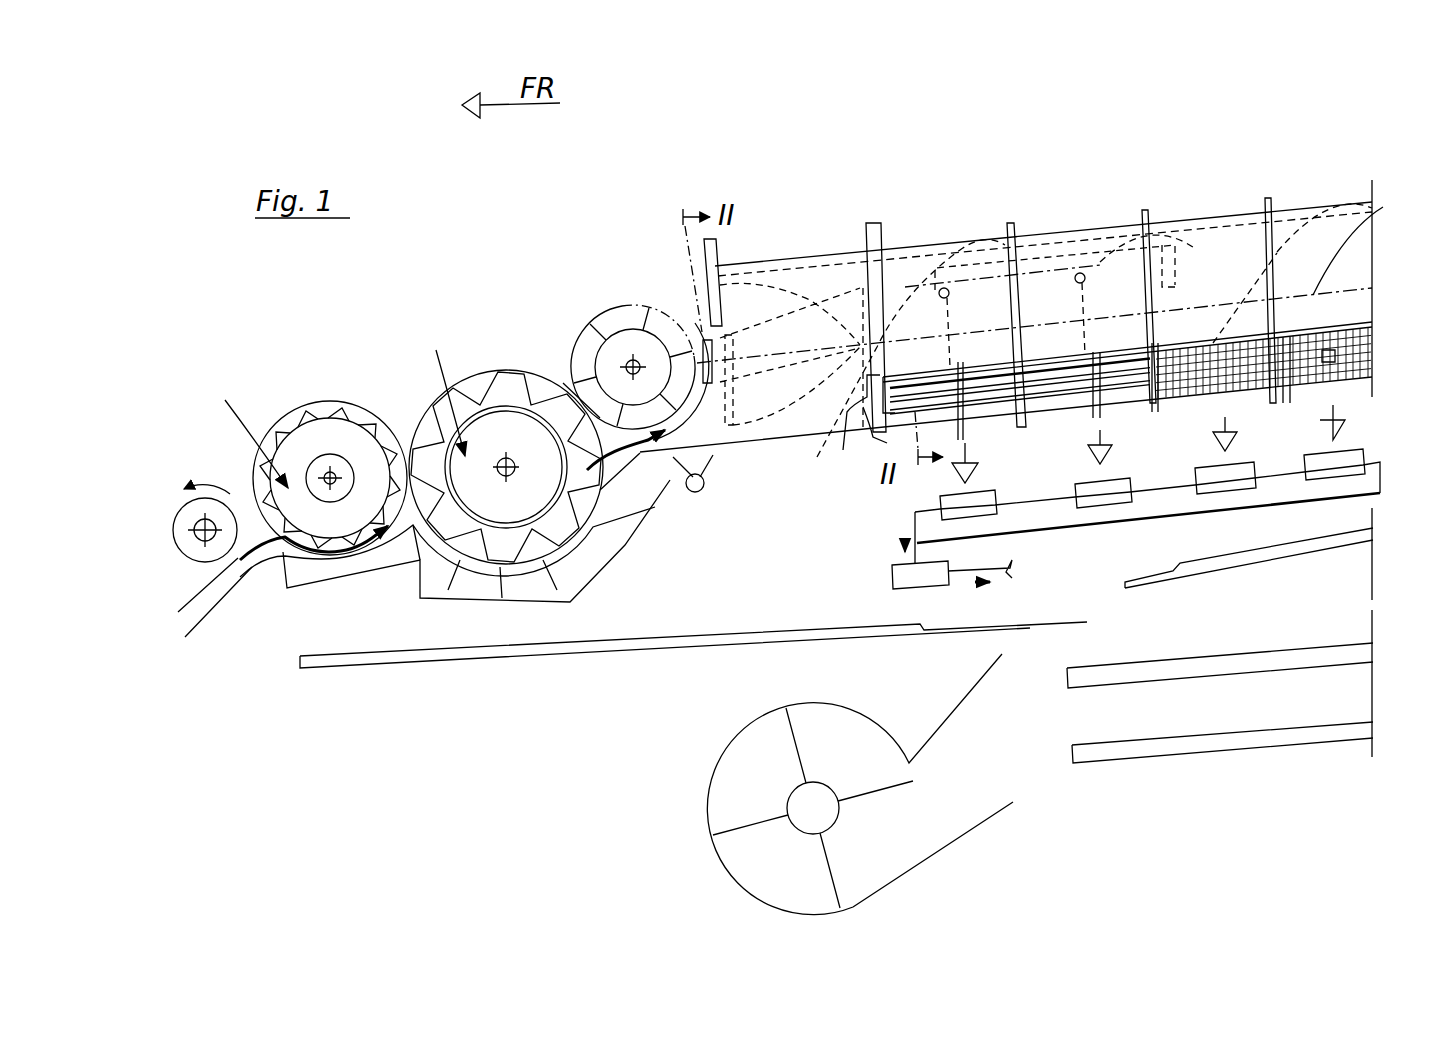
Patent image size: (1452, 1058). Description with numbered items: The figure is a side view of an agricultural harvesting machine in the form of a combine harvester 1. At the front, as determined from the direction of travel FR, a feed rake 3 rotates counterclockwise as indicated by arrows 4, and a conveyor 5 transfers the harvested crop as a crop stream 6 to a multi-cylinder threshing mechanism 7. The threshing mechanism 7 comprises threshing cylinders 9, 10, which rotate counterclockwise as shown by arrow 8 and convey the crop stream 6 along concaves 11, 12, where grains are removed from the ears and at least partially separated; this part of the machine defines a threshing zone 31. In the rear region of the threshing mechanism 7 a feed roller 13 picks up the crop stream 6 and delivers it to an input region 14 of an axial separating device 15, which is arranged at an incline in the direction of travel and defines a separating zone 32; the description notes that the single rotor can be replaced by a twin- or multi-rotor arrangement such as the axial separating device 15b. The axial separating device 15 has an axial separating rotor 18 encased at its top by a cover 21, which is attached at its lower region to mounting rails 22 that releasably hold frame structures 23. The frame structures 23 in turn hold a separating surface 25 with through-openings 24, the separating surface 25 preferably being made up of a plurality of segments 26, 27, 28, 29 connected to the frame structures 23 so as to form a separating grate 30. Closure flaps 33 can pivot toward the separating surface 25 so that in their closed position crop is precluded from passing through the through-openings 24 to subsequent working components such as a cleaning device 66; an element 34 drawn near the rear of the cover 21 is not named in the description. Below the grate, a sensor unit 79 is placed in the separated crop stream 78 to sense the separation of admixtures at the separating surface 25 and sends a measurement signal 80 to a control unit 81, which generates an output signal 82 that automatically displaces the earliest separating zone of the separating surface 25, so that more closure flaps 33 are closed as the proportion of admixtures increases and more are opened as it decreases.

The combine harvester 1 is at (1096, 156).
The feed rake 3 is at (186, 527).
The arrows 4 is at (203, 488).
The conveyor 5 is at (203, 583).
The crop stream 6 is at (248, 568).
The multi-cylinder threshing mechanism 7 is at (435, 452).
The arrow 8 is at (338, 403).
The threshing cylinder 9 is at (315, 440).
The threshing cylinder 10 is at (493, 400).
The concave 11 is at (350, 578).
The concave 12 is at (527, 598).
The feed roller 13 is at (611, 340).
The input region 14 is at (772, 250).
The axial separating device 15 is at (888, 238).
The axial separating device 15b is at (1192, 214).
The axial separating rotor 18 is at (806, 477).
The cover 21 is at (1047, 240).
The screen frame 22 is at (1358, 320).
The frame structure 23 is at (1366, 333).
The through-openings 24 is at (1333, 357).
The separating surface 25 is at (1350, 391).
The segment 26 is at (1317, 373).
The segment 27 is at (1217, 380).
The segment 28 is at (1070, 392).
The segment 29 is at (985, 395).
The separating grate 30 is at (843, 450).
The threshing zone 31 is at (371, 382).
The separating zone 32 is at (993, 212).
The closure flap 33 is at (913, 400).
The deflector plate 34 is at (1365, 237).
The cleaning device 66 is at (1128, 642).
The crop stream 78 is at (957, 470).
The sensor unit 79 is at (950, 510).
The measurement signal 80 is at (912, 545).
The control unit 81 is at (934, 574).
The output signal 82 is at (980, 585).